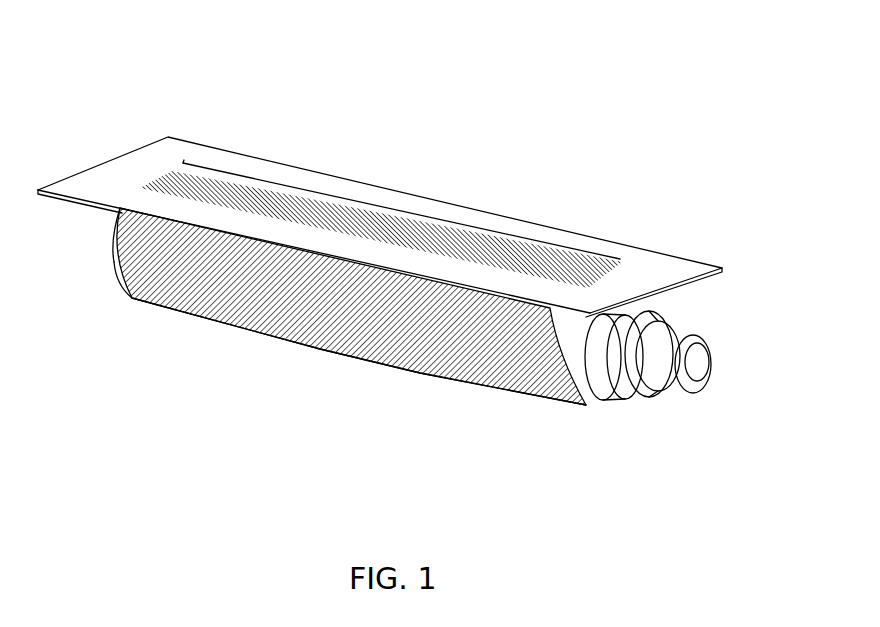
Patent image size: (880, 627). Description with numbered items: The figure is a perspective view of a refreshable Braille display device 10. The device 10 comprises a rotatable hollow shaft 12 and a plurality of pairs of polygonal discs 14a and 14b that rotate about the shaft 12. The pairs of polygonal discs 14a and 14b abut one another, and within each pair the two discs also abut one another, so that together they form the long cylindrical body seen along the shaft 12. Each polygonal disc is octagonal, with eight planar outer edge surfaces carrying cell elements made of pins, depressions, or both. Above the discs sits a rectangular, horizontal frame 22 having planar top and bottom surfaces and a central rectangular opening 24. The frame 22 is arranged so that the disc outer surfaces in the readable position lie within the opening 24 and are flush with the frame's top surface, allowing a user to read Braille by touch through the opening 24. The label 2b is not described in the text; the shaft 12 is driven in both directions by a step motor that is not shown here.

The device 10 is at (580, 81).
The rotatable hollow shaft 12 is at (697, 337).
The horizontal frame 22 is at (648, 258).
The central rectangular opening 24 is at (421, 213).
The roller 2b is at (125, 278).
The polygonal disc 14a is at (122, 248).
The polygonal disc 14b is at (135, 297).